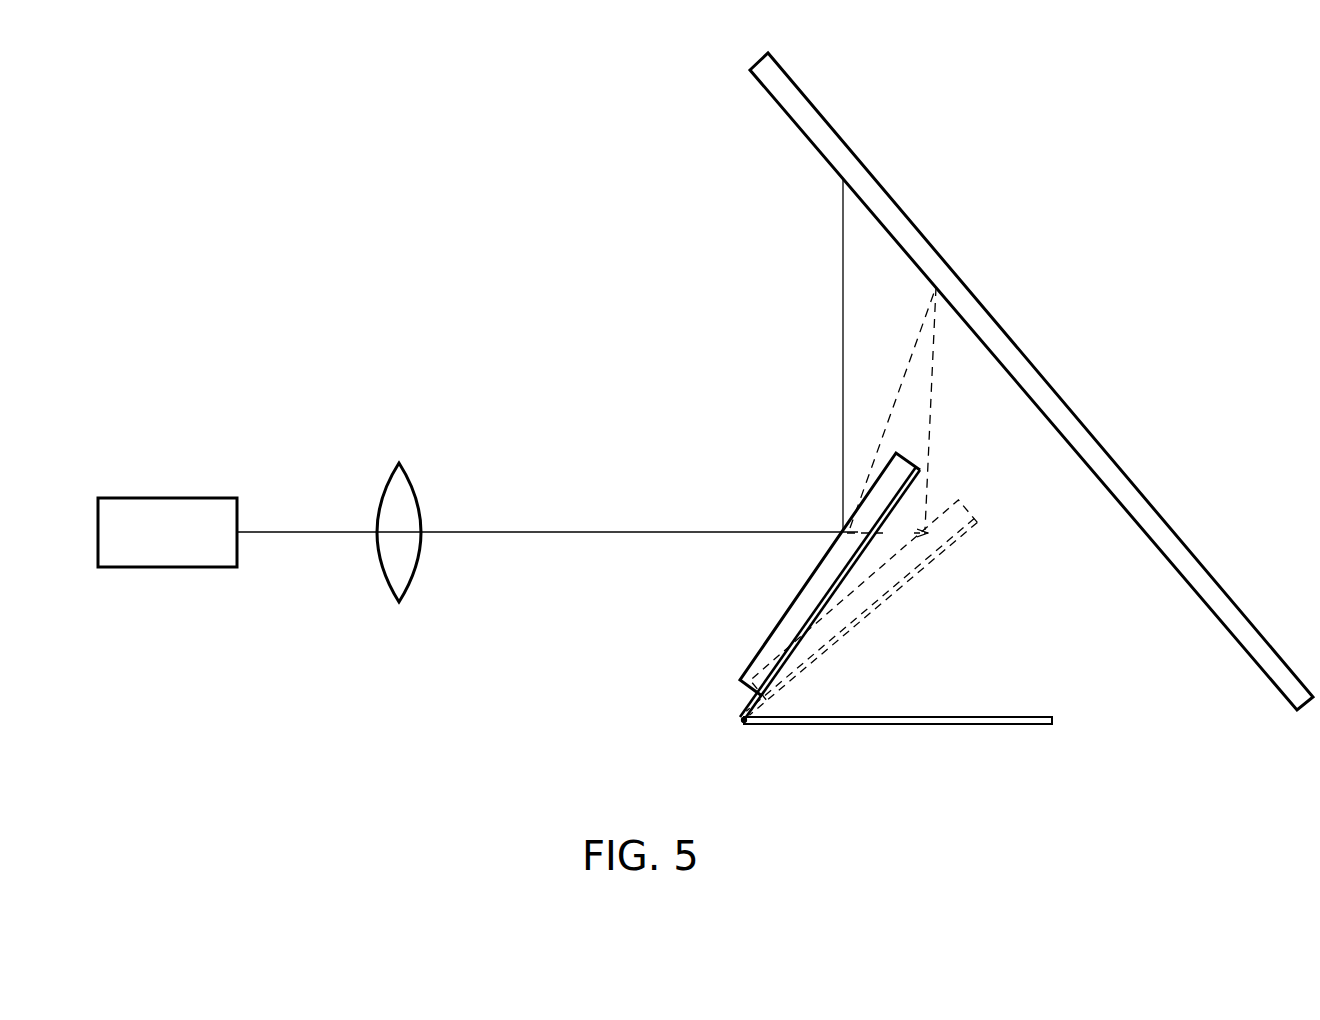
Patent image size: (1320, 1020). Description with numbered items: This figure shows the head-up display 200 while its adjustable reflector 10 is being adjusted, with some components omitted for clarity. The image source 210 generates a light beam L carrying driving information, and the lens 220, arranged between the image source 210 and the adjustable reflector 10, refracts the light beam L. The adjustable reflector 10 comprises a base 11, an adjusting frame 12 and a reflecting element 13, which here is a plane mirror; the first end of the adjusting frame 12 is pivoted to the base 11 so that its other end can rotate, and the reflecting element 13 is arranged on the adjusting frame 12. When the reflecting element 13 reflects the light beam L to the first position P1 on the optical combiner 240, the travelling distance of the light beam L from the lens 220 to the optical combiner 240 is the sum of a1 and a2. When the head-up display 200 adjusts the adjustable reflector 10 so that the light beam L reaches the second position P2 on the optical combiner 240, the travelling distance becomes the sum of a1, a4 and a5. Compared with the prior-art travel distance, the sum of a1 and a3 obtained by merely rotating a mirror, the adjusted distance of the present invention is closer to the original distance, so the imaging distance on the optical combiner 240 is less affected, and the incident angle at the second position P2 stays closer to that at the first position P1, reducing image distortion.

The head-up display 200 is at (404, 178).
The image source 210 is at (176, 497).
The lens 220 is at (398, 603).
The optical combiner 240 is at (1235, 640).
The adjustable reflector 10 is at (776, 744).
The base 11 is at (892, 725).
The adjusting frame 12 is at (827, 594).
The reflecting element 13 is at (767, 650).
The light beam L is at (329, 516).
The travelling distance segment a1 is at (547, 515).
The travelling distance segment a2 is at (822, 355).
The travelling distance segment a3 is at (893, 407).
The travelling distance segment a4 is at (887, 520).
The travelling distance segment a5 is at (944, 408).
The first position P1 is at (842, 178).
The second position P2 is at (934, 301).